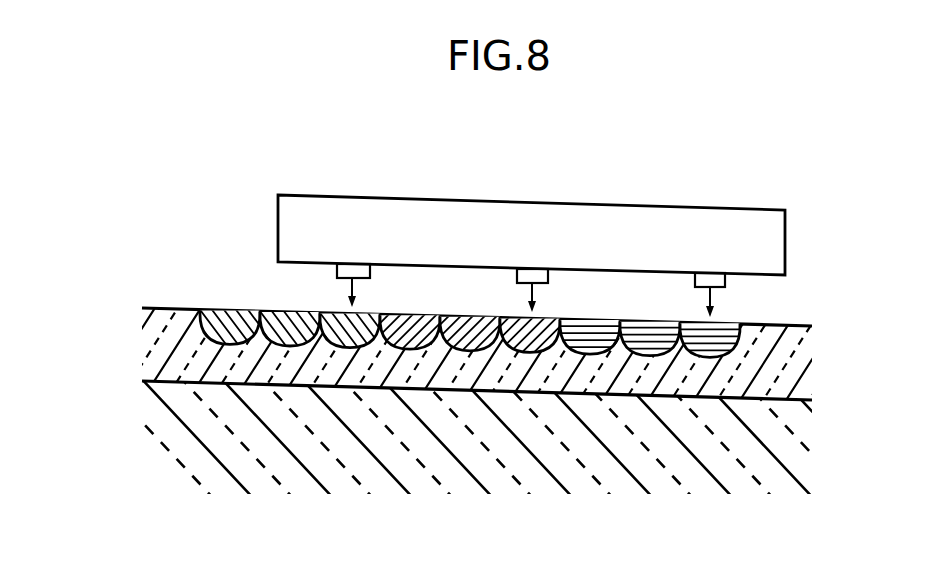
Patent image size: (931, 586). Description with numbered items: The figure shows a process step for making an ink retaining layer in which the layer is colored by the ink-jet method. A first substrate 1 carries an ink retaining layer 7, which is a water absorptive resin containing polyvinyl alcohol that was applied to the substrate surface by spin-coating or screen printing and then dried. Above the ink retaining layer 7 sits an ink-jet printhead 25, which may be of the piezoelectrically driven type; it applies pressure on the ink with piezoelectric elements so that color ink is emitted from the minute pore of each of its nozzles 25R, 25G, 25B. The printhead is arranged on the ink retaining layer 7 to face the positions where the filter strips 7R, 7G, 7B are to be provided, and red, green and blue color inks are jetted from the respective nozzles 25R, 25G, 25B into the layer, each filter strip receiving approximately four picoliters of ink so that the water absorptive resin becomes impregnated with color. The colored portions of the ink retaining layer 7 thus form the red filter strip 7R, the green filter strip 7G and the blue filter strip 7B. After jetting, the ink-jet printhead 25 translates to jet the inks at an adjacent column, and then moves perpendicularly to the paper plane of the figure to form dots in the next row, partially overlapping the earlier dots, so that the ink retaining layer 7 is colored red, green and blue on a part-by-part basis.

The first substrate 1 is at (172, 455).
The ink retaining layer 7 is at (142, 348).
The red filter strip 7R is at (347, 347).
The green filter strip 7G is at (527, 352).
The blue filter strip 7B is at (708, 357).
The ink-jet printhead 25 is at (785, 232).
The red nozzle 25R is at (370, 270).
The green nozzle 25G is at (548, 276).
The blue nozzle 25B is at (725, 281).